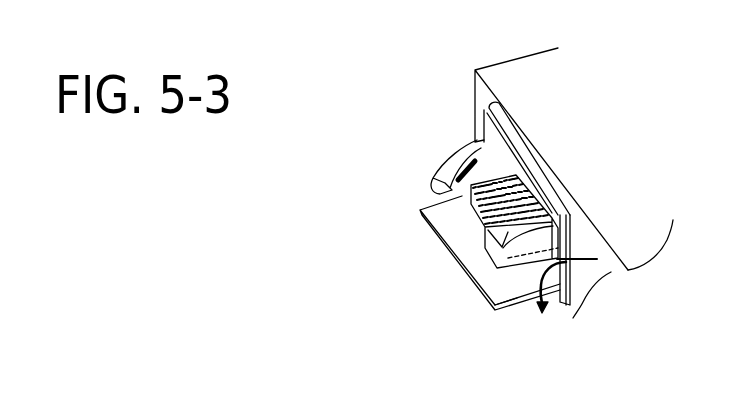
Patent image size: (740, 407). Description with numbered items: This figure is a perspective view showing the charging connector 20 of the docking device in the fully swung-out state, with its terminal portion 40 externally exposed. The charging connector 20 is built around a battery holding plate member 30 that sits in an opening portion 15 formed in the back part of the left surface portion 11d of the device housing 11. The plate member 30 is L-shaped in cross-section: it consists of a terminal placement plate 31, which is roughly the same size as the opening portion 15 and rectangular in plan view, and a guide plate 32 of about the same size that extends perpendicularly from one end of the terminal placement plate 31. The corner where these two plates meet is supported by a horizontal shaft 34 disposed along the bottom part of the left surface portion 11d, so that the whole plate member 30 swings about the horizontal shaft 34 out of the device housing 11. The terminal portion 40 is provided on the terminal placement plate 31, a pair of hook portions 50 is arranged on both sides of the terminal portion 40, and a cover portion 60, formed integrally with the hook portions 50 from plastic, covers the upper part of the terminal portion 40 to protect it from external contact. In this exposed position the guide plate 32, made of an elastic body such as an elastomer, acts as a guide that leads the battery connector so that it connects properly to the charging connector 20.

The device housing 11 is at (487, 69).
The left surface portion 11d is at (490, 96).
The opening portion 15 is at (498, 104).
The charging connector 20 is at (497, 317).
The battery holding plate member 30 is at (551, 309).
The terminal placement plate 31 is at (563, 300).
The guide plate 32 is at (517, 285).
The horizontal shaft 34 is at (583, 285).
The terminal portion 40 is at (467, 237).
The hook portions 50 is at (431, 184).
The cover portion 60 is at (486, 181).